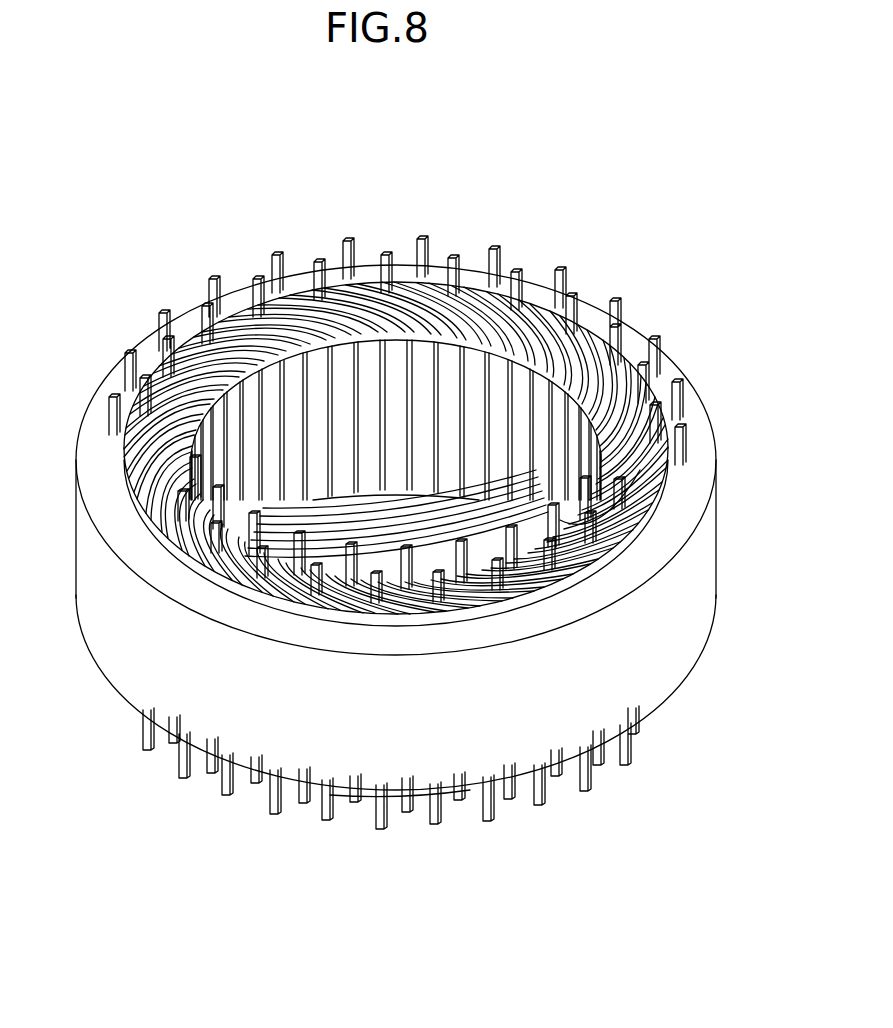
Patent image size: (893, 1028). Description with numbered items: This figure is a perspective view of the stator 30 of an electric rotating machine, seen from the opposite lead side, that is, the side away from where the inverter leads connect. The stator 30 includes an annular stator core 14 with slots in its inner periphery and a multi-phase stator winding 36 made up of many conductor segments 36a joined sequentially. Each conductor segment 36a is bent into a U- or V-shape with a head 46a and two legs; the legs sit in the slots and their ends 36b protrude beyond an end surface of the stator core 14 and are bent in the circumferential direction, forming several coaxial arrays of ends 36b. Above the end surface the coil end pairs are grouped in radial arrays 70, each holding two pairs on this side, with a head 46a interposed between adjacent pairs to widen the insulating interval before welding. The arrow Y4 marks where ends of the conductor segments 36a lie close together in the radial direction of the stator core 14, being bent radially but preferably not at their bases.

The stator 30 is at (403, 198).
The stator core 14 is at (682, 418).
The stator winding 36 is at (130, 318).
The conductor segment 36a is at (242, 560).
The coil end 36b is at (257, 268).
The head 46a is at (167, 533).
The radial array 70 is at (543, 258).
The arrow indicating radially adjacent segment ends Y4 is at (597, 522).